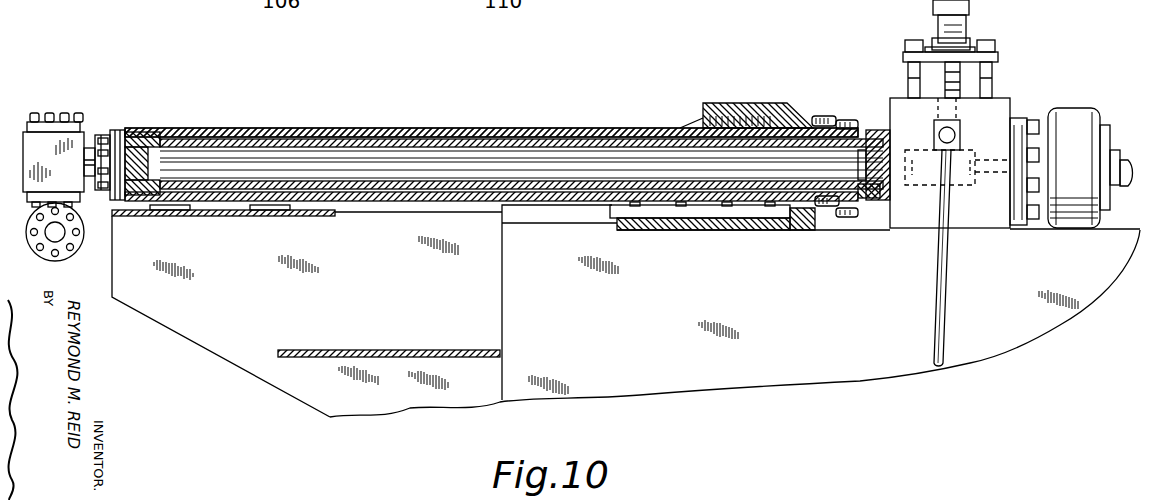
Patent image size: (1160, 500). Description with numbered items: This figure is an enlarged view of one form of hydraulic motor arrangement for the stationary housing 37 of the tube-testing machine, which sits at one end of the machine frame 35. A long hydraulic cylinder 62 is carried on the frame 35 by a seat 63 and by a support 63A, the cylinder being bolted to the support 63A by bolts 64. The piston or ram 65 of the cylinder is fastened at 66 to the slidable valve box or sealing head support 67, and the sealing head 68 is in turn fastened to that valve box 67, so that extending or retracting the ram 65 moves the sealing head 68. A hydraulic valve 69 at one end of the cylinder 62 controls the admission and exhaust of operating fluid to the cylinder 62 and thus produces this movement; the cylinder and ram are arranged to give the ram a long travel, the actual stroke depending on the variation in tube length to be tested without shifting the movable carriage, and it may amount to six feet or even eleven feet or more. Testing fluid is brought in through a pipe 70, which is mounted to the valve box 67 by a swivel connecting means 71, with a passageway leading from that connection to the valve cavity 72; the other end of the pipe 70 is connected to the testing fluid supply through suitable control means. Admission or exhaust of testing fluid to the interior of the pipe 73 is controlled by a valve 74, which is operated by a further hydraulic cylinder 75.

The frame 35 is at (650, 392).
The stationary housing 37 is at (546, 122).
The hydraulic cylinder 62 is at (244, 128).
The seat 63 is at (222, 216).
The support 63A is at (726, 108).
The bolts 64 is at (823, 116).
The piston or ram 65 is at (395, 143).
The fastening 66 is at (880, 130).
The slidable valve box or sealing head support 67 is at (1004, 108).
The sealing head 68 is at (1081, 106).
The hydraulic valve 69 is at (58, 118).
The pipe 70 is at (950, 312).
The swivel connecting means 71 is at (957, 137).
The valve cavity 72 is at (958, 172).
The pipe 73 is at (1124, 163).
The valve 74 is at (945, 170).
The hydraulic cylinder 75 is at (960, 24).